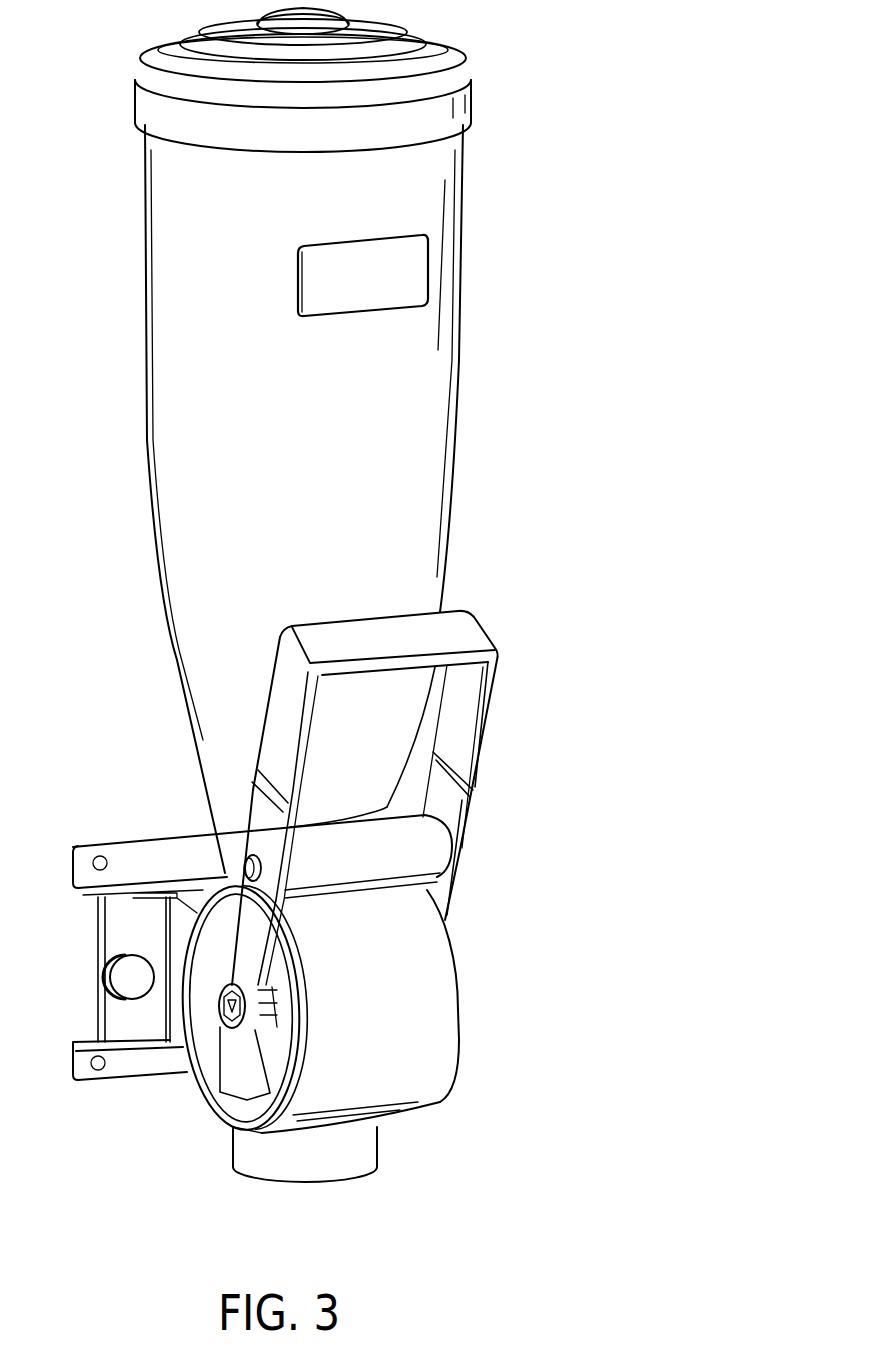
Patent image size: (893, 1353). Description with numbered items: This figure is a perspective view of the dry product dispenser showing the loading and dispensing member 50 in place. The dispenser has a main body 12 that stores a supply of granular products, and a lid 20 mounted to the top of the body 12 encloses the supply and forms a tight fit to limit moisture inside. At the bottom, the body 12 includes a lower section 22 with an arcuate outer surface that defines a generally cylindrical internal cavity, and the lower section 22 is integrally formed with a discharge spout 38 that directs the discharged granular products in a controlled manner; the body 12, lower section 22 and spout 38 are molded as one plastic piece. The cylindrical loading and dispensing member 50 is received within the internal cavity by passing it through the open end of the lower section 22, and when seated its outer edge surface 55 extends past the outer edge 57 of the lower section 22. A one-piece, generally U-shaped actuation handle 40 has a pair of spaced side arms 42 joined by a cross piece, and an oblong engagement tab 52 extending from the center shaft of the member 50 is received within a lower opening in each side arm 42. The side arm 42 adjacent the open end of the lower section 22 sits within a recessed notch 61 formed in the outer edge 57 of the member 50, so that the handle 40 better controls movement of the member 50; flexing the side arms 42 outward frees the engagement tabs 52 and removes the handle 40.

The main body 12 is at (430, 465).
The lid 20 is at (457, 108).
The lower section 22 is at (423, 982).
The discharge spout 38 is at (363, 1153).
The actuation handle 40 is at (450, 632).
The side arms 42 is at (470, 813).
The loading and dispensing member 50 is at (195, 1096).
The engagement tab 52 is at (240, 1030).
The outer edge surface 55 is at (222, 1112).
The outer edge 57 is at (295, 990).
The recessed notch 61 is at (280, 938).